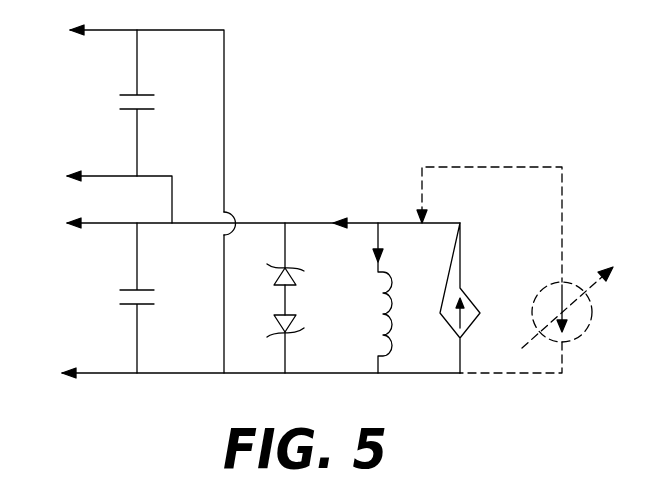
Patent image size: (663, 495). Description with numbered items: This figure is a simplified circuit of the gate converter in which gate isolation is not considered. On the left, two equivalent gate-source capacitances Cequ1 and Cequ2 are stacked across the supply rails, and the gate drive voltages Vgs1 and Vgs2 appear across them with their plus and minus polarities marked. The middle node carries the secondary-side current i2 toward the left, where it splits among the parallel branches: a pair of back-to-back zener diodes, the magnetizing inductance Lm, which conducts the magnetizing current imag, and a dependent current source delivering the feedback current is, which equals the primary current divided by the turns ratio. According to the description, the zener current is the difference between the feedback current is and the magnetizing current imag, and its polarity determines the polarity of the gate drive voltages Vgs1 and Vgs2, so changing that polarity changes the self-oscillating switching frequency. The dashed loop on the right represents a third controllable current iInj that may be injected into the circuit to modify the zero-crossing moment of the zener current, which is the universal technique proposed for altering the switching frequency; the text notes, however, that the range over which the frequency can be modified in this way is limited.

The first equivalent gate-source capacitance Cequ1 is at (165, 103).
The first gate-source voltage Vgs1 is at (71, 100).
The second equivalent gate-source capacitance Cequ2 is at (165, 298).
The second gate-source voltage Vgs2 is at (71, 294).
The secondary current i2 is at (346, 209).
The magnetizing current imag is at (353, 265).
The magnetizing inductance Lm is at (364, 298).
The feedback current is is at (454, 298).
The third controllable injected current iInj is at (515, 270).